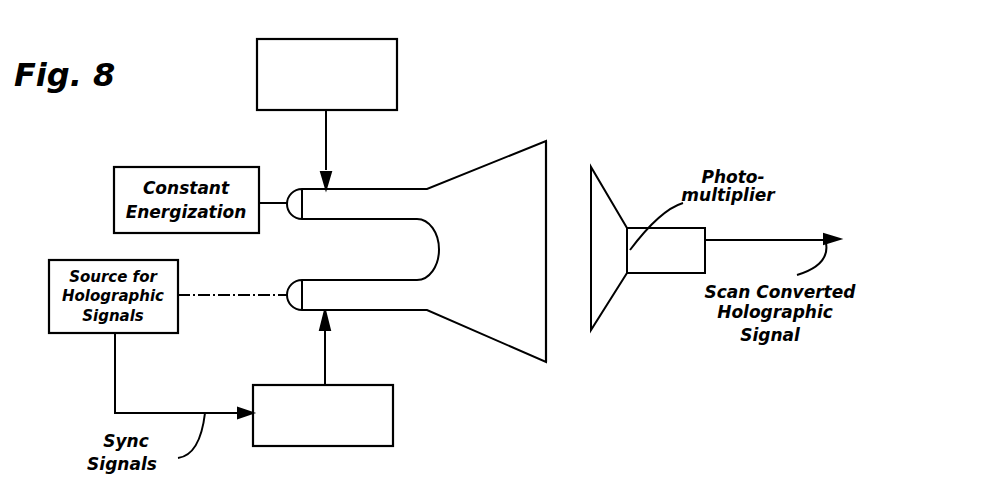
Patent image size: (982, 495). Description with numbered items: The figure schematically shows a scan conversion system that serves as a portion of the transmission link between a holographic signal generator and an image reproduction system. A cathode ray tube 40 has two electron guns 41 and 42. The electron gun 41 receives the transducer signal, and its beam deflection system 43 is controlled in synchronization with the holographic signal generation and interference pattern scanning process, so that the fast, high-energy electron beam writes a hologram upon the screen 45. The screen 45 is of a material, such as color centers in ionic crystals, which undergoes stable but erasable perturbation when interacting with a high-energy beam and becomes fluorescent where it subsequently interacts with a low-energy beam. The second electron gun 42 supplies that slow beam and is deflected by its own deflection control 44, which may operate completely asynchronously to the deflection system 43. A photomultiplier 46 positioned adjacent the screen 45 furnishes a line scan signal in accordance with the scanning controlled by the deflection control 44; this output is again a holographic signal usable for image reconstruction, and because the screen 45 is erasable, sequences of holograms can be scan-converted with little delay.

The cathode ray tube 40 is at (462, 358).
The electron gun 41 is at (289, 280).
The electron gun 42 is at (288, 188).
The beam deflection system 43 is at (363, 385).
The deflection control 44 is at (383, 39).
The screen 45 is at (546, 155).
The photomultiplier 46 is at (600, 180).